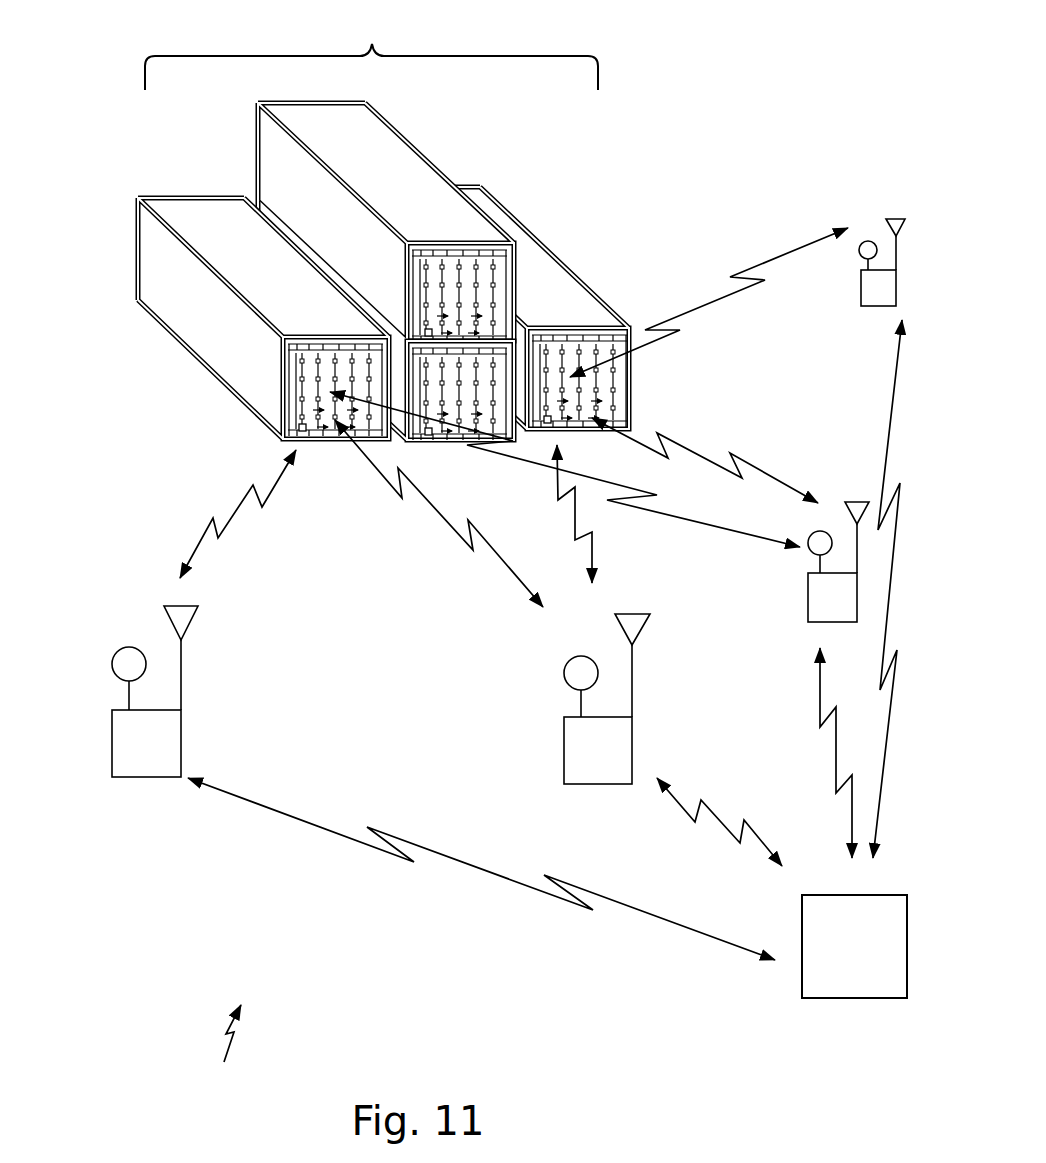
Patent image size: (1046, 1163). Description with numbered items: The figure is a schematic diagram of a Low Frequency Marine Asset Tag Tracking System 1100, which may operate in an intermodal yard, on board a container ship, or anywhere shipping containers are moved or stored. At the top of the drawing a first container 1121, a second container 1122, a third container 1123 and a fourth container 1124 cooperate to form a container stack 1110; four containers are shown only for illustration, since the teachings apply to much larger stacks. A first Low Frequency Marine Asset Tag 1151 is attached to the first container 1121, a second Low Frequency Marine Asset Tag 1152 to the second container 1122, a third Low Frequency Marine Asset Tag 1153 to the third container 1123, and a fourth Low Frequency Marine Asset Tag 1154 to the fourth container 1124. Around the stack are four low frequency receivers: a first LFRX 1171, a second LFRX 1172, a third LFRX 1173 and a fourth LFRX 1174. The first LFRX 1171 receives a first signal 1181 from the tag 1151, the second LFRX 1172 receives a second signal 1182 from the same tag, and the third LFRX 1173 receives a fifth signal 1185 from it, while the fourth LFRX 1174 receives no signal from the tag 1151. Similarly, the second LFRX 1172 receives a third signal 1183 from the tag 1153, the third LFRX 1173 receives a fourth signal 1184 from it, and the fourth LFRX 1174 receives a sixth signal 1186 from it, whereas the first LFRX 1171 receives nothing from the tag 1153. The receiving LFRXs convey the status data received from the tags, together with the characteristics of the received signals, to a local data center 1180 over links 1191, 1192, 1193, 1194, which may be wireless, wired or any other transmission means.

The Low Frequency Marine Asset Tag Tracking System 1100 is at (226, 1054).
The container stack 1110 is at (371, 48).
The first container 1121 is at (138, 198).
The second container 1122 is at (262, 104).
The third container 1123 is at (480, 187).
The fourth container 1124 is at (262, 207).
The first Low Frequency Marine Asset Tag 1151 is at (305, 437).
The second Low Frequency Marine Asset Tag 1152 is at (430, 333).
The third Low Frequency Marine Asset Tag 1153 is at (549, 420).
The fourth Low Frequency Marine Asset Tag 1154 is at (431, 437).
The first LFRX 1171 is at (145, 778).
The second LFRX 1172 is at (563, 743).
The third LFRX 1173 is at (807, 593).
The fourth LFRX 1174 is at (858, 295).
The local data center 1180 is at (832, 991).
The first signal 1181 is at (235, 515).
The second signal 1182 is at (435, 508).
The third signal 1183 is at (577, 512).
The fourth signal 1184 is at (715, 463).
The fifth signal 1185 is at (565, 469).
The sixth signal 1186 is at (715, 300).
The link 1191 is at (487, 872).
The link 1192 is at (713, 810).
The link 1193 is at (835, 738).
The link 1194 is at (887, 760).